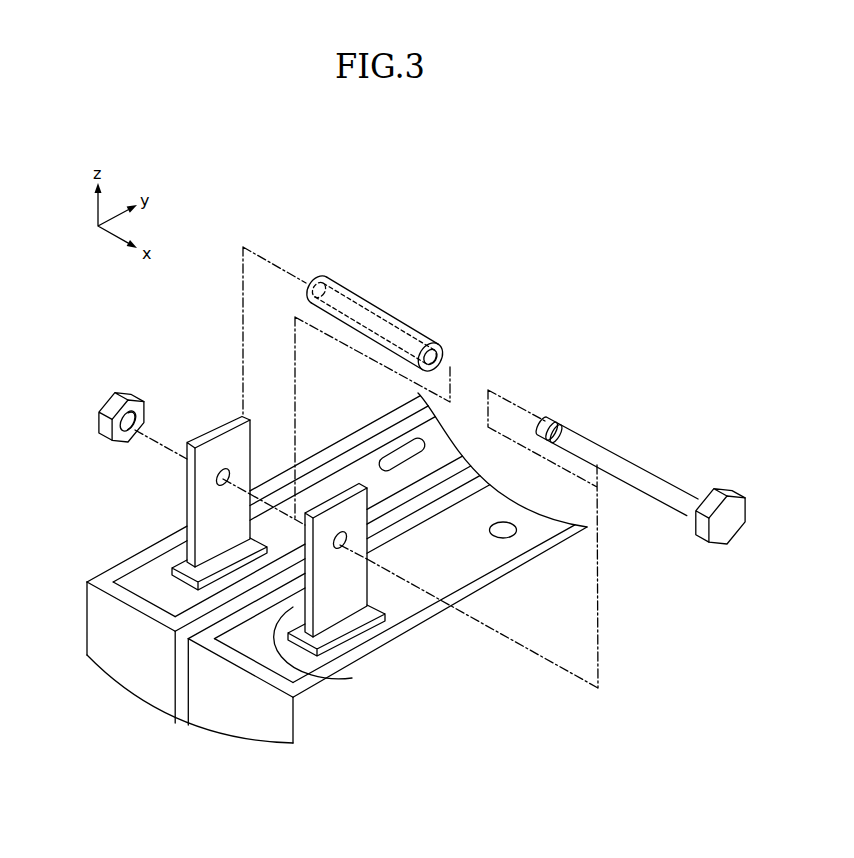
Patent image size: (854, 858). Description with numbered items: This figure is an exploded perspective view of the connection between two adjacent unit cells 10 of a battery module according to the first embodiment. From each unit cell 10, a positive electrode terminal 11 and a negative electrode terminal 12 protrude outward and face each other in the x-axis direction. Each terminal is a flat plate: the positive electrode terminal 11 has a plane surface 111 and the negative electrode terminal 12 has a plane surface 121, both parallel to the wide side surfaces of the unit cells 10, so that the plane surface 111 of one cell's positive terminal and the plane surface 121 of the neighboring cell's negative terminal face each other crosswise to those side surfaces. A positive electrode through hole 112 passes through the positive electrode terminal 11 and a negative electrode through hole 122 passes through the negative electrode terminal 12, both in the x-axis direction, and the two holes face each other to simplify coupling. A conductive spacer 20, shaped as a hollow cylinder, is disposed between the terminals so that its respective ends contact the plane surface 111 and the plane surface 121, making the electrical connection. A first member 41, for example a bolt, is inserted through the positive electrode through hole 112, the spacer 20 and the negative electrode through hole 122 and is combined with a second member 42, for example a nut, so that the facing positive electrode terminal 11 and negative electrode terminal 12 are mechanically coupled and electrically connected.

The unit cell 10 is at (214, 697).
The positive electrode terminal 11 is at (370, 605).
The plane surface 111 is at (262, 648).
The positive electrode through hole 112 is at (342, 546).
The negative electrode terminal 12 is at (154, 504).
The plane surface 121 is at (208, 537).
The negative electrode through hole 122 is at (222, 479).
The spacer 20 is at (383, 311).
The first member 41 is at (633, 452).
The second member 42 is at (112, 394).